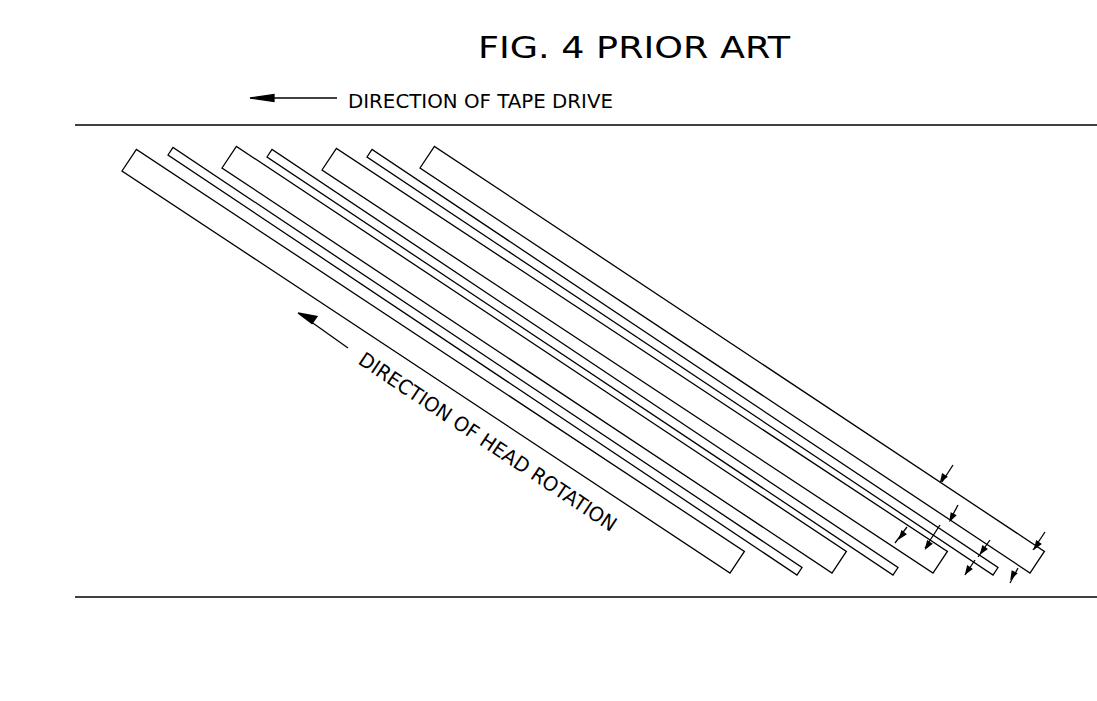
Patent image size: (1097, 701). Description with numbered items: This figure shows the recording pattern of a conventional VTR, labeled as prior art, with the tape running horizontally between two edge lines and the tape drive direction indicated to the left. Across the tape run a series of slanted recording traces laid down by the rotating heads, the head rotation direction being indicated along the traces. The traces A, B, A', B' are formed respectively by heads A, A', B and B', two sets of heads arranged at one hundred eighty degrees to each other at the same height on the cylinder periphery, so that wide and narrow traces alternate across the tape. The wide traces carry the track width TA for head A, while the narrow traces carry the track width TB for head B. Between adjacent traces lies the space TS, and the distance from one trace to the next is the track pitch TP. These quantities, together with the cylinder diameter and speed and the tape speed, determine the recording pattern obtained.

The trace of head A is at (529, 356).
The trace of head B is at (576, 352).
The trace of head A' is at (627, 353).
The trace of head B' is at (575, 352).
The track pitch TP is at (922, 507).
The space TS is at (945, 512).
The track width for head B TB is at (978, 550).
The track width for head A TA is at (1028, 556).